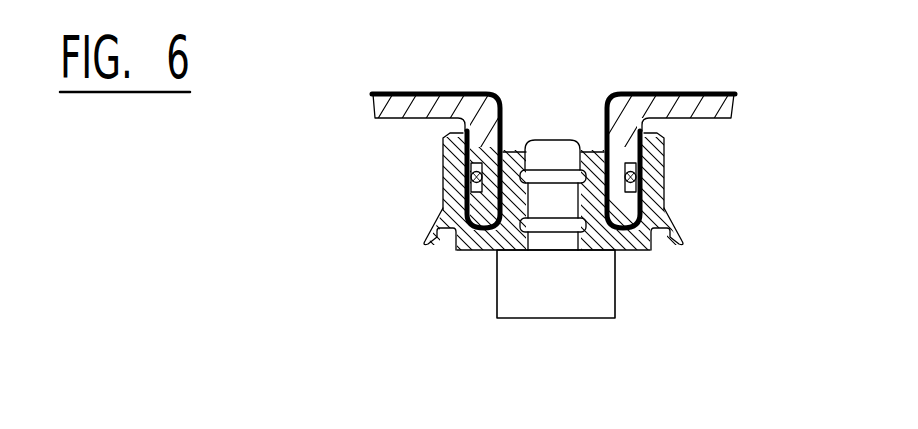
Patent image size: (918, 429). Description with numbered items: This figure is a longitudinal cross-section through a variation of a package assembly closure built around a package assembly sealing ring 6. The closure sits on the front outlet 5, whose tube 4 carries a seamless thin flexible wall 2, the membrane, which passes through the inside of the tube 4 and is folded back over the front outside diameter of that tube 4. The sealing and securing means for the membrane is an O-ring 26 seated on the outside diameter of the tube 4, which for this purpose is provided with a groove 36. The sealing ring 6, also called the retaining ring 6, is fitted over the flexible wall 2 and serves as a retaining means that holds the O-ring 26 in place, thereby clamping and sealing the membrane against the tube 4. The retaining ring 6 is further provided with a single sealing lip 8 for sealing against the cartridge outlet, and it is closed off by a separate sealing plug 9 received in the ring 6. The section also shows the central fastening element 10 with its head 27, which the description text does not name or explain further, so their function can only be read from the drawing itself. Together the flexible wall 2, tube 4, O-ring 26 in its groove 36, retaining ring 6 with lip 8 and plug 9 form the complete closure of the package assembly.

The flexible wall 2 is at (483, 40).
The tube 4 is at (760, 160).
The front outlet 5 is at (422, 90).
The sealing ring 6 is at (670, 363).
The sealing lip 8 is at (422, 242).
The sealing plug 9 is at (497, 363).
The bolt 10 is at (558, 363).
The O-ring 26 is at (765, 220).
The bolt head 27 is at (542, 139).
The groove 36 is at (620, 363).